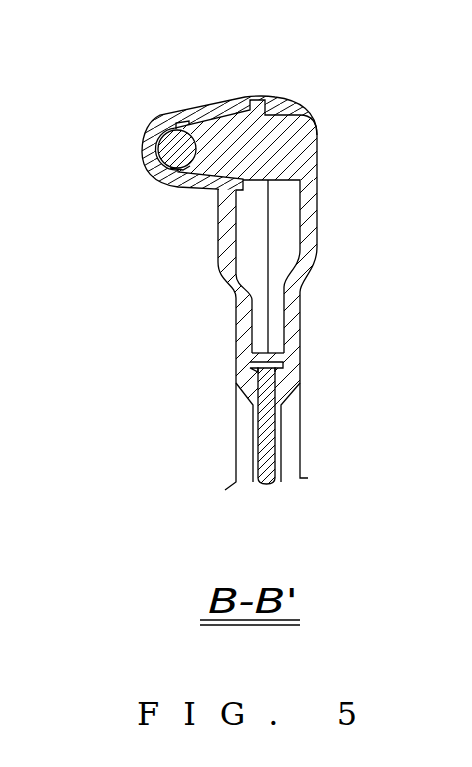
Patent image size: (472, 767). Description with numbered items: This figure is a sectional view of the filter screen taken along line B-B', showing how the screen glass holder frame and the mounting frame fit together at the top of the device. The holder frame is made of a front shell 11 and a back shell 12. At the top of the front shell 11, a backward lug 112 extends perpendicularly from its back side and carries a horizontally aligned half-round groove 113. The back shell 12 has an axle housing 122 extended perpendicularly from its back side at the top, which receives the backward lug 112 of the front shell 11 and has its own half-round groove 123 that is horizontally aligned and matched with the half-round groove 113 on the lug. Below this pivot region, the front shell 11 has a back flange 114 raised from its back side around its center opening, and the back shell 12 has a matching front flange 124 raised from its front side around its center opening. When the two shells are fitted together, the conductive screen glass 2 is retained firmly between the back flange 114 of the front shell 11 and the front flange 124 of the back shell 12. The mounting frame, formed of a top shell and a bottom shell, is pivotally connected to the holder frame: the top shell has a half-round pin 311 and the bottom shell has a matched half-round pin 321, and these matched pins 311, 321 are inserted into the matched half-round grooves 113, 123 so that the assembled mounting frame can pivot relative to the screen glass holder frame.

The conductive screen glass 2 is at (268, 455).
The front shell 11 is at (309, 253).
The back shell 12 is at (232, 261).
The backward lug 112 is at (303, 131).
The half-round groove 113 is at (213, 109).
The back flange 114 is at (285, 357).
The axle housing 122 is at (150, 137).
The half-round groove 123 is at (172, 149).
The front flange 124 is at (258, 357).
The half-round pin 311 is at (164, 127).
The half-round pin 321 is at (178, 168).